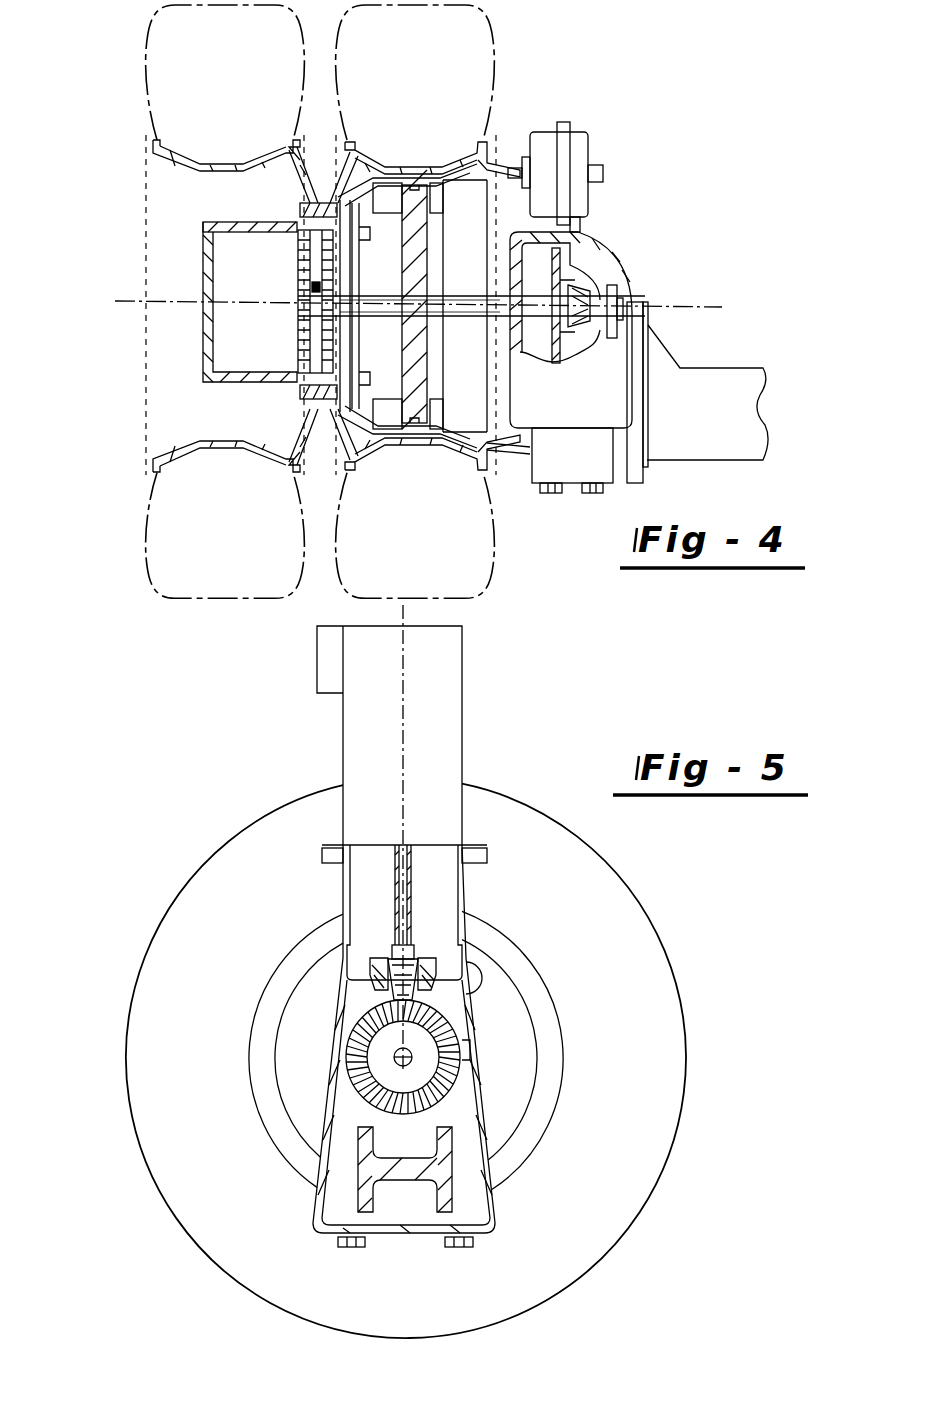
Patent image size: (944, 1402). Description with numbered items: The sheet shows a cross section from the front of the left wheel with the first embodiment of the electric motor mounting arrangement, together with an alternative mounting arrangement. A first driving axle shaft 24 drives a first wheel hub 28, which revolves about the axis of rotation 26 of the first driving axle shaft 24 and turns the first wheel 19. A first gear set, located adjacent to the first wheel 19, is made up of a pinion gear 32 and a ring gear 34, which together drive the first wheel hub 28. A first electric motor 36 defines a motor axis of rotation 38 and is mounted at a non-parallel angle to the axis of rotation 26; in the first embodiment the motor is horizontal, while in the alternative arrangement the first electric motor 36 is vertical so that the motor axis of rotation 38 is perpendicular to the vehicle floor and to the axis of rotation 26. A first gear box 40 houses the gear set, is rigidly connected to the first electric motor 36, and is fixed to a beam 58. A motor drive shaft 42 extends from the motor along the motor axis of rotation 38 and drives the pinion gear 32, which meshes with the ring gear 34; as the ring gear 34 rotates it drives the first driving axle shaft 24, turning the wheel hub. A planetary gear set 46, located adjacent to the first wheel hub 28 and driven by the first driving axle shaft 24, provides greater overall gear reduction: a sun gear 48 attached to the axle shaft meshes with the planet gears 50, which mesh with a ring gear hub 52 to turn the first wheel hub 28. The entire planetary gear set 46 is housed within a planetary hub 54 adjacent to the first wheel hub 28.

In FIG. 5, the first wheel 19 is at (204, 1034).
In FIG. 4, the first driving axle shaft 24 is at (493, 325).
In FIG. 5, the first driving axle shaft 24 is at (392, 1064).
In FIG. 5, the axis of rotation 26 is at (399, 1050).
In FIG. 4, the first wheel hub 28 is at (350, 190).
In FIG. 4, the pinion gear 32 is at (592, 328).
In FIG. 5, the pinion gear 32 is at (435, 1003).
In FIG. 4, the ring gear 34 is at (570, 262).
In FIG. 5, the ring gear 34 is at (460, 1048).
In FIG. 5, the first electric motor 36 is at (353, 742).
In FIG. 5, the motor axis of rotation 38 is at (405, 880).
In FIG. 4, the first gear box 40 is at (605, 418).
In FIG. 4, the motor drive shaft 42 is at (592, 300).
In FIG. 5, the motor drive shaft 42 is at (412, 912).
In FIG. 4, the planetary gear set 46 is at (240, 343).
In FIG. 4, the sun gear 48 is at (302, 298).
In FIG. 4, the planet gears 50 is at (306, 258).
In FIG. 4, the ring gear hub 52 is at (290, 378).
In FIG. 4, the planetary hub 54 is at (268, 227).
In FIG. 4, the beam 58 is at (672, 383).